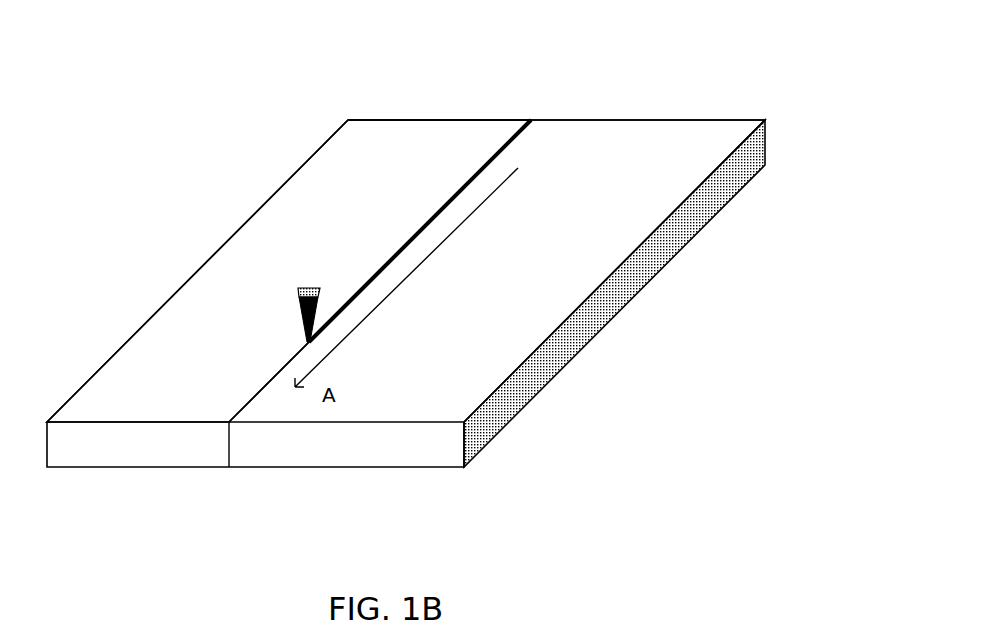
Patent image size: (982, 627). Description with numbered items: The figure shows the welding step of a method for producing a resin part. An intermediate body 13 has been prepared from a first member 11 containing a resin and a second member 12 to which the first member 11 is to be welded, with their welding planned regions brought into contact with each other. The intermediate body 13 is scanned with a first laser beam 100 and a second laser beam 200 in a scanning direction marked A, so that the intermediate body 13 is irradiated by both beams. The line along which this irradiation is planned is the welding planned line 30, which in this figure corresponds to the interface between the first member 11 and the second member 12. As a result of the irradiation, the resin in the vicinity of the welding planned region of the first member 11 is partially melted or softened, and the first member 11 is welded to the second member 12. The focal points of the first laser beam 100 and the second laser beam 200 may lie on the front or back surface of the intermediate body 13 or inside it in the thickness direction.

The first member 11 is at (510, 337).
The second member 12 is at (185, 312).
The intermediate body 13 is at (674, 109).
The welding planned line 30 is at (228, 428).
The first laser beam 100 is at (285, 293).
The second laser beam 200 is at (302, 287).